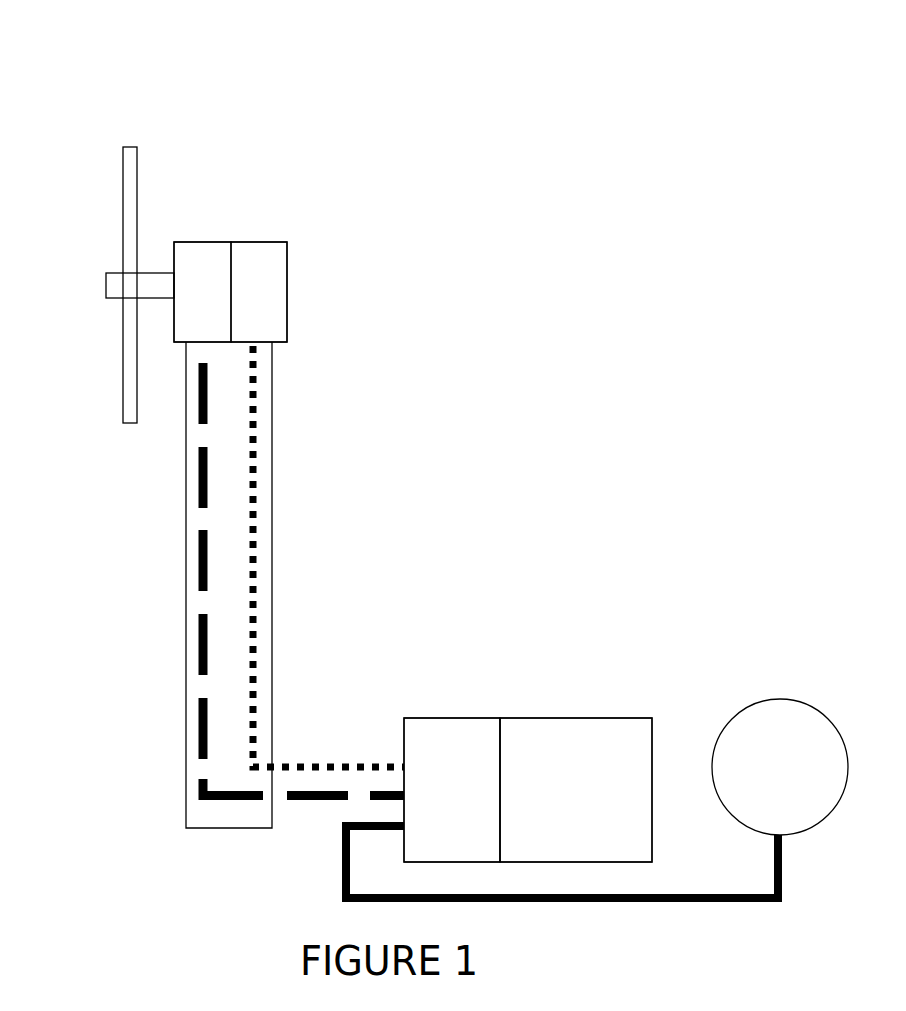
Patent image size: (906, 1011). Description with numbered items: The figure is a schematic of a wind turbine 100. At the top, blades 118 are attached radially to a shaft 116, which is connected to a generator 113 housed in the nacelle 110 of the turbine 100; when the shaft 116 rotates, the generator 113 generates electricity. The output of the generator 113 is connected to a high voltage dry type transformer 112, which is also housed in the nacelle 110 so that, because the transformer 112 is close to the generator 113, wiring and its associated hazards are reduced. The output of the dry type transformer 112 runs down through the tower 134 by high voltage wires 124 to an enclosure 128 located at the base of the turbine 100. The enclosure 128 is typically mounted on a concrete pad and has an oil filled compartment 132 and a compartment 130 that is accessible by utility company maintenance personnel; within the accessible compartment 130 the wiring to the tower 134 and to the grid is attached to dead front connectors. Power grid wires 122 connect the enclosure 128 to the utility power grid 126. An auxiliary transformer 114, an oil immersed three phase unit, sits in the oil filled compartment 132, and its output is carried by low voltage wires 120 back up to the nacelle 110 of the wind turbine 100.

The wind turbine 100 is at (242, 132).
The nacelle 110 is at (292, 237).
The high voltage dry type transformer 112 is at (276, 288).
The generator 113 is at (206, 239).
The auxiliary transformer 114 is at (528, 790).
The shaft 116 is at (154, 276).
The blades 118 is at (108, 334).
The low voltage wires 120 is at (197, 558).
The power grid wires 122 is at (558, 904).
The high voltage wires 124 is at (259, 528).
The utility power grid 126 is at (780, 767).
The enclosure 128 is at (513, 708).
The accessible compartment 130 is at (443, 719).
The oil filled compartment 132 is at (607, 711).
The tower 134 is at (183, 802).